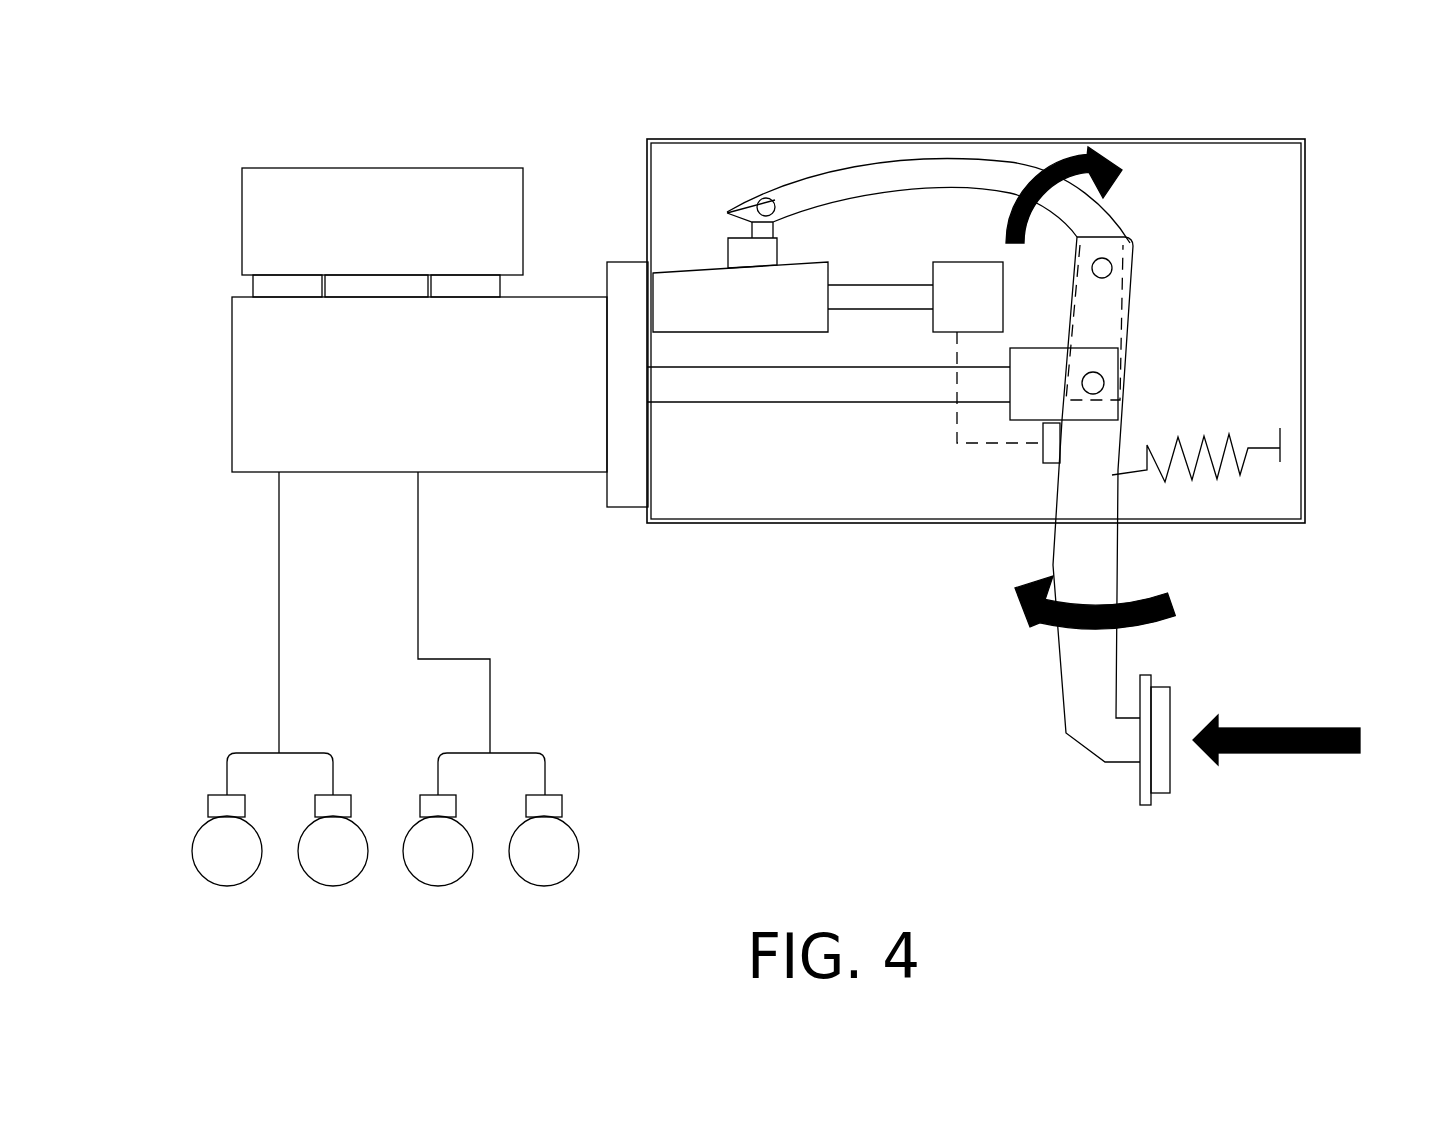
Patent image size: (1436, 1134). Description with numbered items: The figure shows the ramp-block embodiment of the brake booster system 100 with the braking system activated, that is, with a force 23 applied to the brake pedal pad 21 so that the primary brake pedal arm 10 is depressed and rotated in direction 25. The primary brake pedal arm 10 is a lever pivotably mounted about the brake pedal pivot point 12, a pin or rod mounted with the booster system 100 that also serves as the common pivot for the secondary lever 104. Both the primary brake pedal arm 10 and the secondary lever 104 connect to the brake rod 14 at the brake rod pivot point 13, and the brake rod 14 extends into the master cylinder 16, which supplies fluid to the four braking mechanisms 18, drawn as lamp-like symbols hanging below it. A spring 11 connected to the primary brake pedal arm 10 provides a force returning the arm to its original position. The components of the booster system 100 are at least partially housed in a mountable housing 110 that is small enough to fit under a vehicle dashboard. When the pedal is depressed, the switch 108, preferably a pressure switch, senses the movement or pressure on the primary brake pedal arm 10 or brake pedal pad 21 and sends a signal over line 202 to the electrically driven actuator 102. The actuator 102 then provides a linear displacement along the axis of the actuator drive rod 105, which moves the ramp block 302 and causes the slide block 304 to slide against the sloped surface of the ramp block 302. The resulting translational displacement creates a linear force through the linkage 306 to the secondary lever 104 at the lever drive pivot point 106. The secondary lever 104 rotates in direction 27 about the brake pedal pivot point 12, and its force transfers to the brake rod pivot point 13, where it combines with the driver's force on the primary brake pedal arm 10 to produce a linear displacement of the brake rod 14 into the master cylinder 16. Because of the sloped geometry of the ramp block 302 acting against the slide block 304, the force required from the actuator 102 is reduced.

The primary brake pedal arm 10 is at (1077, 690).
The spring 11 is at (1230, 440).
The brake pedal pivot point 12 is at (1106, 268).
The brake rod pivot point 13 is at (1097, 385).
The brake rod 14 is at (742, 390).
The master cylinder 16 is at (268, 383).
The braking mechanisms 18 is at (225, 795).
The brake pedal pad 21 is at (1170, 730).
The force 23 is at (1285, 754).
The direction 25 is at (1165, 597).
The direction 27 is at (1093, 150).
The brake booster system 100 is at (1260, 193).
The actuator 102 is at (976, 312).
The secondary lever 104 is at (900, 170).
The actuator drive rod 105 is at (928, 305).
The lever drive pivot point 106 is at (765, 198).
The switch 108 is at (1053, 452).
The mountable housing 110 is at (1302, 140).
The line 202 is at (985, 447).
The ramp block 302 is at (792, 292).
The slide block 304 is at (743, 258).
The linkage 306 is at (752, 232).